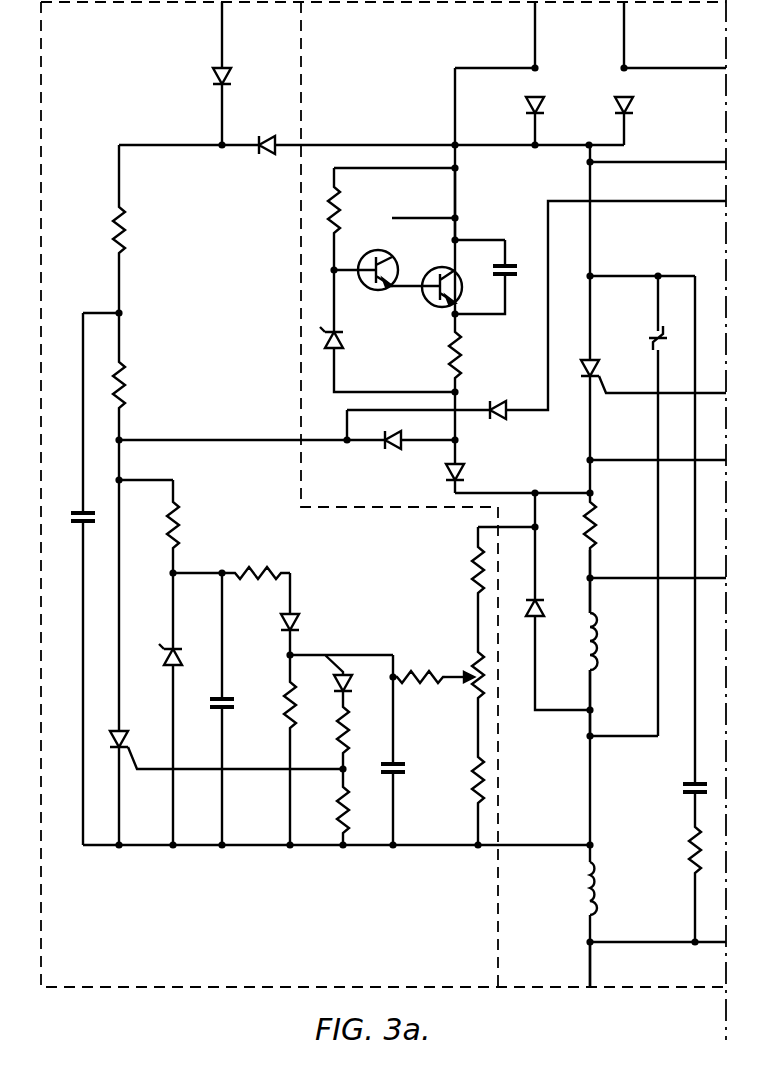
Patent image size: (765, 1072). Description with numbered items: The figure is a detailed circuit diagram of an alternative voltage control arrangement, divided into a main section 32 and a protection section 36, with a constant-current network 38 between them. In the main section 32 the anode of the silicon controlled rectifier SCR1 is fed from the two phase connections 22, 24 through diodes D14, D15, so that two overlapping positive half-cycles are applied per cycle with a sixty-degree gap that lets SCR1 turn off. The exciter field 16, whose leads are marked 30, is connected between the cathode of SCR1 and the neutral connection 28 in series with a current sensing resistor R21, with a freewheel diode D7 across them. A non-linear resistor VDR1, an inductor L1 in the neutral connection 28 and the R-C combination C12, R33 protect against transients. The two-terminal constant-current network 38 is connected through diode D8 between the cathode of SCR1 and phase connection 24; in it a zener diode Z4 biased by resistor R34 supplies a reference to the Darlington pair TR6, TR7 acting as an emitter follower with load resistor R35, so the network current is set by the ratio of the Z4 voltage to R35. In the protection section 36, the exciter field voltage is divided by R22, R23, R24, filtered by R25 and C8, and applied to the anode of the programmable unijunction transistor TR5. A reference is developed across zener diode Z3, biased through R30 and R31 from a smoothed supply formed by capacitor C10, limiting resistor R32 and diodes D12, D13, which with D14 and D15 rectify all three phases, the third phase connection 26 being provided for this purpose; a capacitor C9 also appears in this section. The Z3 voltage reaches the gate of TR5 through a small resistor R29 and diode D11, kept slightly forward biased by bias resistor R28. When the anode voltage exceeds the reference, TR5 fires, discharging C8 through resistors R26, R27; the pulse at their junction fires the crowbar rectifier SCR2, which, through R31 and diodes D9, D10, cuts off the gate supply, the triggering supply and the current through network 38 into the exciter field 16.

The protection section 36 is at (106, 52).
The main section 32 is at (387, 52).
The third phase connection 26 is at (222, 45).
The phase connection 24 is at (535, 25).
The phase connection 22 is at (624, 33).
The neutral connection 28 is at (590, 963).
The constant-current network 38 is at (466, 220).
The coil leads 30 is at (596, 572).
The exciter field 16 is at (596, 628).
The diode D12 is at (249, 80).
The diode D13 is at (273, 131).
The diode D15 is at (511, 111).
The diode D14 is at (650, 108).
The diode D10 is at (507, 396).
The diode D9 is at (390, 457).
The diode D8 is at (472, 471).
The freewheel diode D7 is at (551, 596).
The diode D11 is at (270, 626).
The zener diode Z4 is at (347, 346).
The zener diode Z3 is at (158, 662).
The voltage dependent resistor VDR1 is at (635, 325).
The silicon controlled rectifier SCR1 is at (619, 370).
The crowbar silicon controlled rectifier SCR2 is at (139, 730).
The programmable unijunction transistor TR5 is at (338, 660).
The transistor TR6 is at (378, 283).
The transistor TR7 is at (433, 300).
The limiting resistor R32 is at (141, 230).
The resistor R31 is at (142, 385).
The resistor R30 is at (196, 525).
The small resistor R29 is at (258, 561).
The bias resistor R28 is at (267, 716).
The resistor R26 is at (323, 732).
The resistor R27 is at (323, 810).
The resistor R25 is at (434, 666).
The resistor R22 is at (454, 570).
The resistor R23 is at (478, 655).
The resistor R24 is at (454, 780).
The resistor R34 is at (356, 209).
The emitter load resistor R35 is at (478, 355).
The current sensing resistor R21 is at (612, 525).
The resistor R33 is at (671, 850).
The capacitor C10 is at (71, 535).
The capacitor C9 is at (235, 689).
The capacitor C8 is at (407, 754).
The capacitor C12 is at (674, 776).
The inductor L1 is at (608, 888).